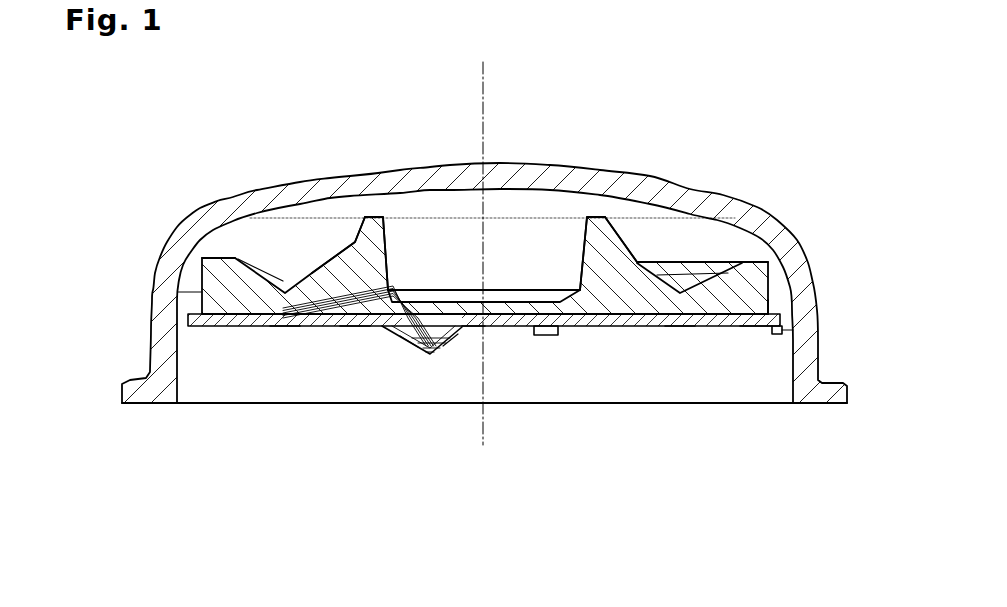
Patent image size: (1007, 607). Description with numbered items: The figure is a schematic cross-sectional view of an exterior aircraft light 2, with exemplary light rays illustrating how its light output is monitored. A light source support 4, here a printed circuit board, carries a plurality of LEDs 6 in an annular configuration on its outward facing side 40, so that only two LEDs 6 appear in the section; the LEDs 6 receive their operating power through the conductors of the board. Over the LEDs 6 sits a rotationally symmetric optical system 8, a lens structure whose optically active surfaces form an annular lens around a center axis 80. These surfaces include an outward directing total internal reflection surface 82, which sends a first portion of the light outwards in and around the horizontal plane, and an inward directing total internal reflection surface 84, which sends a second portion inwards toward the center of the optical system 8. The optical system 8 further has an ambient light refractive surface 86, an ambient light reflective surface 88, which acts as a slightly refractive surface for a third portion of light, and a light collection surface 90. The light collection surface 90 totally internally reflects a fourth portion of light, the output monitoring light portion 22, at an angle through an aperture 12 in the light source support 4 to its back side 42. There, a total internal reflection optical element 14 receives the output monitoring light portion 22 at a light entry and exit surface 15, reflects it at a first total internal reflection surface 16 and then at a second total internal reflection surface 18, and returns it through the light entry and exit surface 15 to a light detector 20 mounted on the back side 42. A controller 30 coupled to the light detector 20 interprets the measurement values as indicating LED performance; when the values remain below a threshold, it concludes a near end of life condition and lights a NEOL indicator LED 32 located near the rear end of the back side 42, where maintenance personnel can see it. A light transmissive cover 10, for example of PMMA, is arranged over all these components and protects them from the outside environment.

The exterior aircraft light 2 is at (733, 133).
The light source support 4 is at (642, 327).
The LEDs 6 is at (286, 324).
The optical system 8 is at (307, 287).
The light transmissive cover 10 is at (788, 224).
The aperture 12 is at (401, 328).
The total internal reflection optical element 14 is at (430, 359).
The light entry and exit surface 15 is at (430, 317).
The first total internal reflection surface 16 is at (412, 343).
The second total internal reflection surface 18 is at (457, 350).
The light detector 20 is at (470, 327).
The output monitoring light portion 22 is at (354, 324).
The controller 30 is at (545, 336).
The NEOL indicator LED 32 is at (783, 333).
The outward facing side 40 is at (753, 310).
The back side 42 is at (755, 330).
The center axis 80 is at (483, 70).
The outward directing total internal reflection surface 82 is at (228, 258).
The inward directing total internal reflection surface 84 is at (338, 276).
The ambient light refractive surface 86 is at (335, 255).
The ambient light reflective surface 88 is at (388, 251).
The light collection surface 90 is at (400, 300).